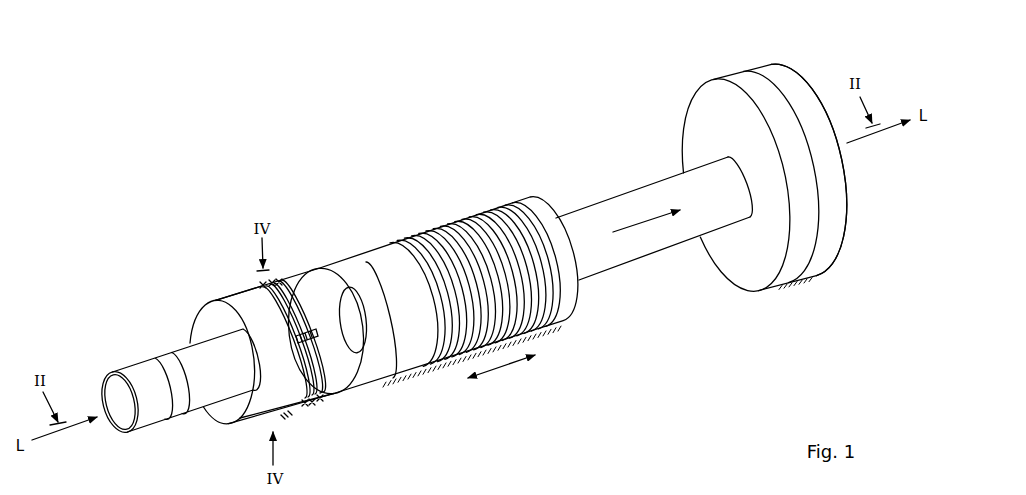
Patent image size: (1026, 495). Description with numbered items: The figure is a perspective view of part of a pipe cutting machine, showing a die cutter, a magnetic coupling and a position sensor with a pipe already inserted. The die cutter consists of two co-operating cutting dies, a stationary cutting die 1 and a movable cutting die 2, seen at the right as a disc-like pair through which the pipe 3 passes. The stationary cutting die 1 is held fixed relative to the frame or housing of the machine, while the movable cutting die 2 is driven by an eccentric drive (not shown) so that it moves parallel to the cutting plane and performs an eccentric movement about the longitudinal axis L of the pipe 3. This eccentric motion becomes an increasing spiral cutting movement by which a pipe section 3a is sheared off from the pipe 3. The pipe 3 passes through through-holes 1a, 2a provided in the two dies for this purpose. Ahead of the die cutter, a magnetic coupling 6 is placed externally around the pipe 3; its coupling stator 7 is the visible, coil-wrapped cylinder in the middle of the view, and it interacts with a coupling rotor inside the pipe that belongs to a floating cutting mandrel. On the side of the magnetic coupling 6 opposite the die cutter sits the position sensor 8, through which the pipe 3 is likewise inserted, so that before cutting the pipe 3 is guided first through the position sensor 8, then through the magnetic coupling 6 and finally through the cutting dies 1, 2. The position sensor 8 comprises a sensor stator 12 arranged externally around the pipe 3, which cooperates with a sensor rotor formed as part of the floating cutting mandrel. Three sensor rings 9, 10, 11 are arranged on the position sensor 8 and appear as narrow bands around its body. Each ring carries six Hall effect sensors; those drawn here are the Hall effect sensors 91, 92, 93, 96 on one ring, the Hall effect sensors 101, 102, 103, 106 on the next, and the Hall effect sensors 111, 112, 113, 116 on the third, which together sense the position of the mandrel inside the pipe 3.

The stationary cutting die 1 is at (720, 83).
The through-hole 1a is at (748, 193).
The movable cutting die 2 is at (753, 72).
The through-hole 2a is at (813, 87).
The pipe 3 is at (598, 217).
The pipe section 3a is at (865, 173).
The magnetic coupling 6 is at (423, 223).
The coupling stator 7 is at (522, 208).
The position sensor 8 is at (220, 218).
The sensor ring 9 is at (303, 368).
The sensor ring 10 is at (312, 378).
The sensor ring 11 is at (303, 313).
The sensor stator 12 is at (317, 290).
The Hall effect sensor 91 is at (264, 286).
The Hall effect sensor 92 is at (307, 407).
The Hall effect sensor 93 is at (283, 417).
The Hall effect sensor 96 is at (235, 297).
The Hall effect sensor 101 is at (272, 285).
The Hall effect sensor 102 is at (313, 403).
The Hall effect sensor 103 is at (285, 415).
The Hall effect sensor 106 is at (248, 293).
The Hall effect sensor 111 is at (279, 282).
The Hall effect sensor 112 is at (320, 399).
The Hall effect sensor 113 is at (290, 413).
The Hall effect sensor 116 is at (262, 284).